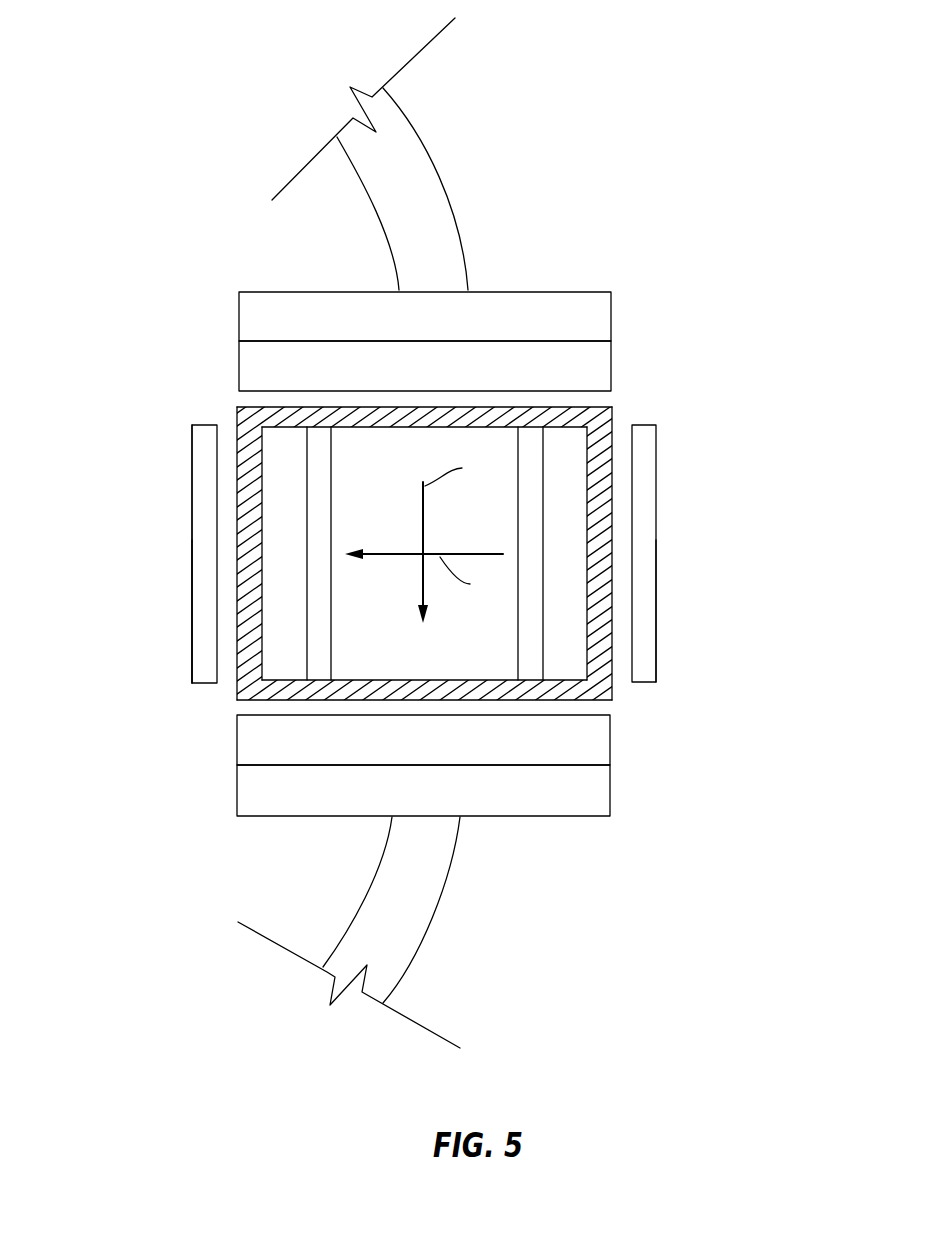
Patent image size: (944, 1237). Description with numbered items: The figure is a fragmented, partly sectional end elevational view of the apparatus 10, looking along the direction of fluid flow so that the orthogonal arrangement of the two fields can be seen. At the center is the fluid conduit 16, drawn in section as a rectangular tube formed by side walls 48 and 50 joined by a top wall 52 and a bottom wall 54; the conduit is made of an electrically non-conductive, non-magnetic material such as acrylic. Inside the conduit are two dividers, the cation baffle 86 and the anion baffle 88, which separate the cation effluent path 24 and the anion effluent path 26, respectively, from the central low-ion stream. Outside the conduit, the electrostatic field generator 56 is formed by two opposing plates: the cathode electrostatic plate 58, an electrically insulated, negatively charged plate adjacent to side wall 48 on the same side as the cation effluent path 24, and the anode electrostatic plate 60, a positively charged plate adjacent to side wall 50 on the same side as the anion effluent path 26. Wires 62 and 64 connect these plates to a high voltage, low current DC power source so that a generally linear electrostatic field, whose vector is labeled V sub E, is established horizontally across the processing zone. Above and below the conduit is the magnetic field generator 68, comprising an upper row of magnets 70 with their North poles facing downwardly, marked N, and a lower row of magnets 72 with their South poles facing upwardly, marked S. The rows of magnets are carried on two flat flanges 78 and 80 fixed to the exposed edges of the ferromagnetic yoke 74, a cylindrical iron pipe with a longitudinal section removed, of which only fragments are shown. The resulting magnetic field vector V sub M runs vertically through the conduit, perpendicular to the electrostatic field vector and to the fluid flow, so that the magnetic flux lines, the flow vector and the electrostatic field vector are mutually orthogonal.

The apparatus 10 is at (720, 128).
The fluid conduit 16 is at (612, 474).
The cation effluent path 24 is at (270, 532).
The anion effluent path 26 is at (570, 548).
The side wall 48 is at (250, 597).
The side wall 50 is at (612, 599).
The top wall 52 is at (277, 418).
The bottom wall 54 is at (287, 690).
The electrostatic field generator 56 is at (189, 452).
The cathode electrostatic plate 58 is at (192, 513).
The anode electrostatic plate 60 is at (657, 556).
The wire 62 is at (192, 556).
The wire 64 is at (657, 582).
The magnetic field generator 68 is at (446, 173).
The upper row of magnets 70 is at (613, 364).
The lower row of magnets 72 is at (611, 728).
The ferromagnetic yoke 74 is at (440, 908).
The flange 78 is at (546, 290).
The flange 80 is at (611, 790).
The cation baffle 86 is at (323, 637).
The anion baffle 88 is at (527, 598).